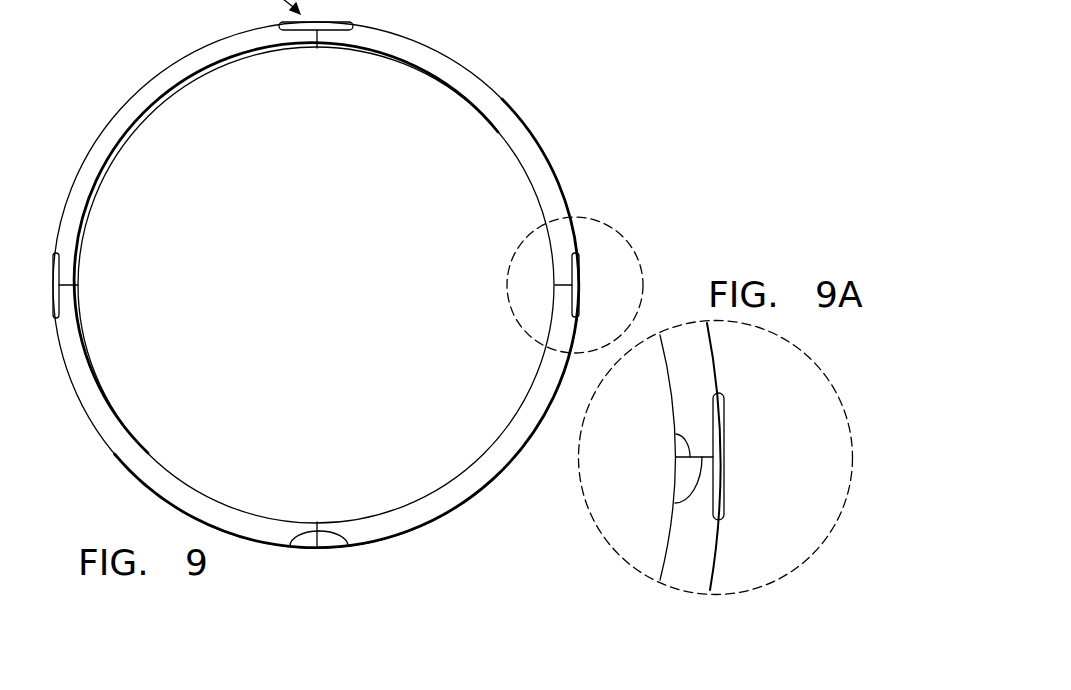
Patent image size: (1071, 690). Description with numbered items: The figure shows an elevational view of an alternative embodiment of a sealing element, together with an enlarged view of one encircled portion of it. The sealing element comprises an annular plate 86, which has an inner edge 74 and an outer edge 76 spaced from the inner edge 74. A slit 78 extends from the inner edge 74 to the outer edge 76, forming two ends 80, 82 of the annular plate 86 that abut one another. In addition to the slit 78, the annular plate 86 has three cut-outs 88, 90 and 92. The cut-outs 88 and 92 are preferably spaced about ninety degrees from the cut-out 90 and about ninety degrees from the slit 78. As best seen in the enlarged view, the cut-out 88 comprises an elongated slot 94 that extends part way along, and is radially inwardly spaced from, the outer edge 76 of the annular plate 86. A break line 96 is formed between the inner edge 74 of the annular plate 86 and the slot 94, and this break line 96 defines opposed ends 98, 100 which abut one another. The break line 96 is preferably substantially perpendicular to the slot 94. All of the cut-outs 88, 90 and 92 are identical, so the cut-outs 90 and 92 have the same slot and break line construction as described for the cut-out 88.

In FIG. 9, the inner edge 74 is at (118, 156).
In FIG. 9A, the inner edge 74 is at (665, 553).
In FIG. 9, the outer edge 76 is at (122, 104).
In FIG. 9A, the outer edge 76 is at (720, 372).
In FIG. 9, the slit 78 is at (323, 507).
In FIG. 9, the end 80 is at (291, 547).
In FIG. 9, the end 82 is at (347, 548).
In FIG. 9, the annular plate 86 is at (487, 98).
In FIG. 9, the cut-out 88 is at (608, 248).
In FIG. 9A, the cut-out 88 is at (775, 438).
In FIG. 9, the cut-out 90 is at (567, 285).
In FIG. 9, the cut-out 92 is at (47, 315).
In FIG. 9A, the elongated slot 94 is at (723, 474).
In FIG. 9A, the break line 96 is at (669, 457).
In FIG. 9A, the end 98 is at (676, 434).
In FIG. 9A, the end 100 is at (674, 505).